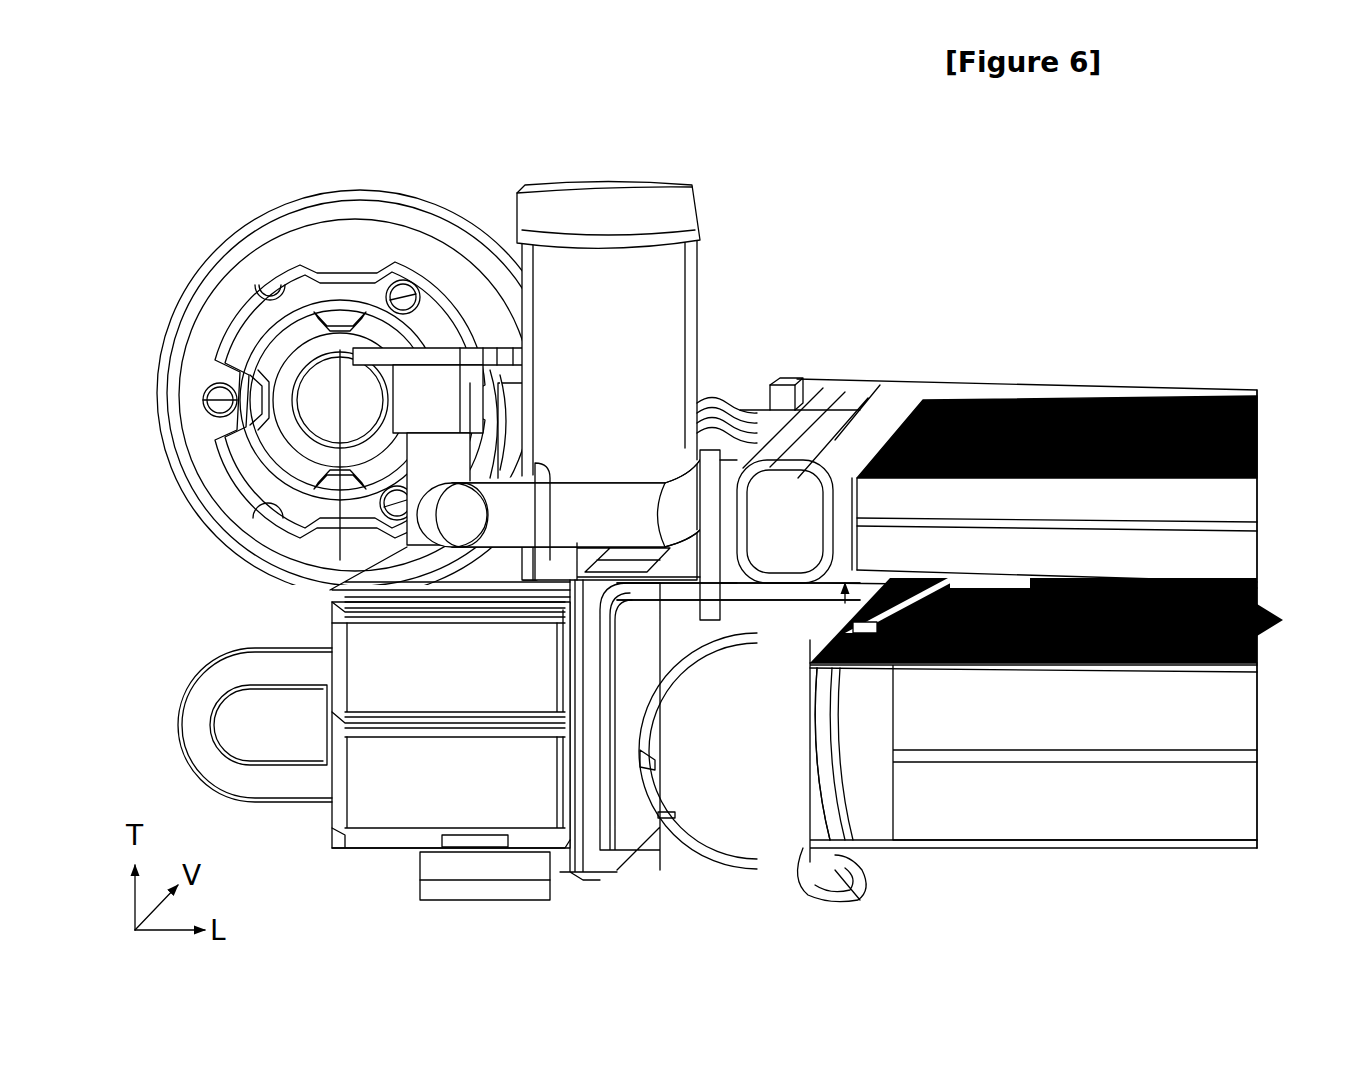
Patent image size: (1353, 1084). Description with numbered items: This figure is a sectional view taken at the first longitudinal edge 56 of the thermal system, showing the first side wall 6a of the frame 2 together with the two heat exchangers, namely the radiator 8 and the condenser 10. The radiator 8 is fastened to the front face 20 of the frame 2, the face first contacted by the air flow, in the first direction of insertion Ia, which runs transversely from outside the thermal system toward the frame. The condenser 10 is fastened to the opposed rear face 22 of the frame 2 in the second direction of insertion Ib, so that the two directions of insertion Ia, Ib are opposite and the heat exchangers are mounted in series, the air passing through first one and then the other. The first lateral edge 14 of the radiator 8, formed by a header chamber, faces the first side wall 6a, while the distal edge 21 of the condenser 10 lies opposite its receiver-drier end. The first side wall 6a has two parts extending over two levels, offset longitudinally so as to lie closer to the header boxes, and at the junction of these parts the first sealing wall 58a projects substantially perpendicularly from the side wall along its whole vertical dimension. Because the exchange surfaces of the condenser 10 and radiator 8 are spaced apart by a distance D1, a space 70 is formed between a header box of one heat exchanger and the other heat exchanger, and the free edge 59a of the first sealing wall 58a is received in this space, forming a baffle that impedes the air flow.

The frame 2 is at (372, 805).
The first side wall 6a is at (748, 445).
The radiator 8 is at (1222, 826).
The condenser 10 is at (1246, 504).
The first lateral edge 14 is at (657, 770).
The front face 20 is at (406, 876).
The distal edge 21 is at (733, 535).
The rear face 22 is at (497, 217).
The first longitudinal edge 56 is at (183, 555).
The first sealing wall 58a is at (805, 597).
The free edge 59a is at (862, 660).
The space 70 is at (750, 613).
The distance D1 is at (957, 556).
The first direction of insertion Ia is at (1073, 372).
The second direction of insertion Ib is at (1063, 860).